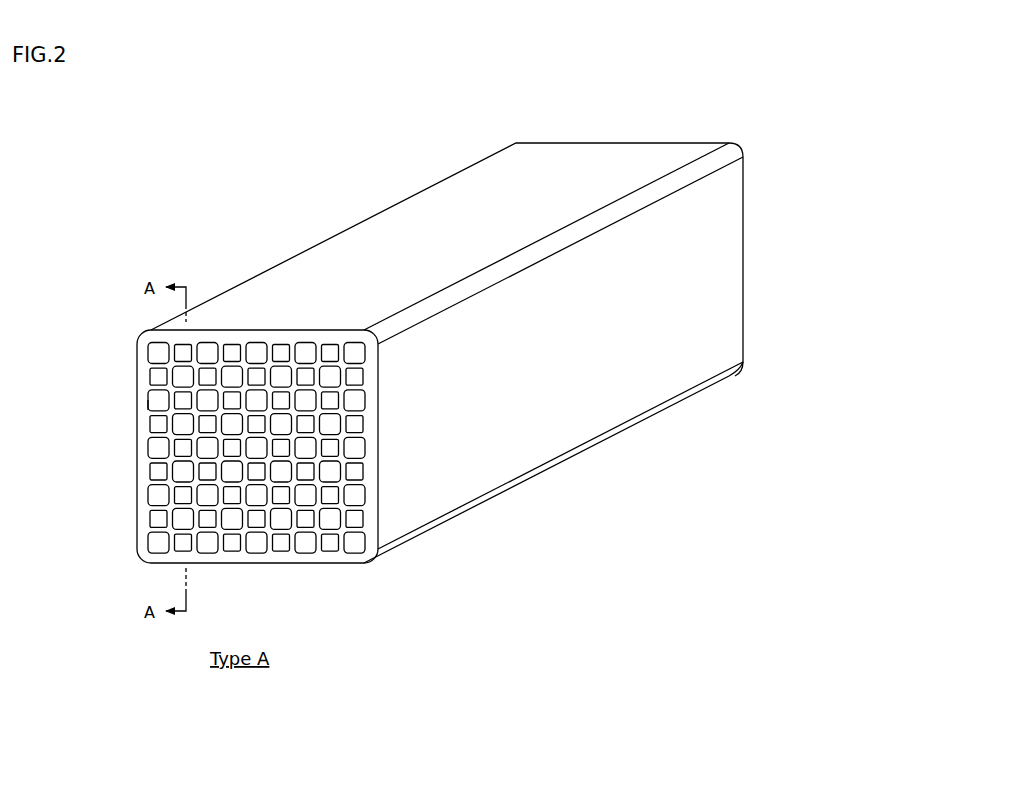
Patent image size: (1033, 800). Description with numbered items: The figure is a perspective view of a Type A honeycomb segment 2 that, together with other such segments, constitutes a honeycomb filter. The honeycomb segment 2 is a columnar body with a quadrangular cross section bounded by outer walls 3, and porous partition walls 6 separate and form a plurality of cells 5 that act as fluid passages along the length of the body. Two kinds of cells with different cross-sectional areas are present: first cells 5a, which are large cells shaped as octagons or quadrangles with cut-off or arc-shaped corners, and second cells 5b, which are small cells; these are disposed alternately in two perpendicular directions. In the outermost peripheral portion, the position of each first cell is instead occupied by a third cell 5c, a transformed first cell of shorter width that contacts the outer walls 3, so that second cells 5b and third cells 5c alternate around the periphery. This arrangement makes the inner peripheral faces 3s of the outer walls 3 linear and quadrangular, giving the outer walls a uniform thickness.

The honeycomb segment 2 is at (578, 95).
The outer wall 3 is at (141, 376).
The inner peripheral face of the outer wall 3s is at (149, 407).
The cell 5 is at (97, 425).
The first cell 5a is at (177, 419).
The second cell 5b is at (179, 447).
The third cell 5c is at (159, 490).
The partition wall 6 is at (160, 363).